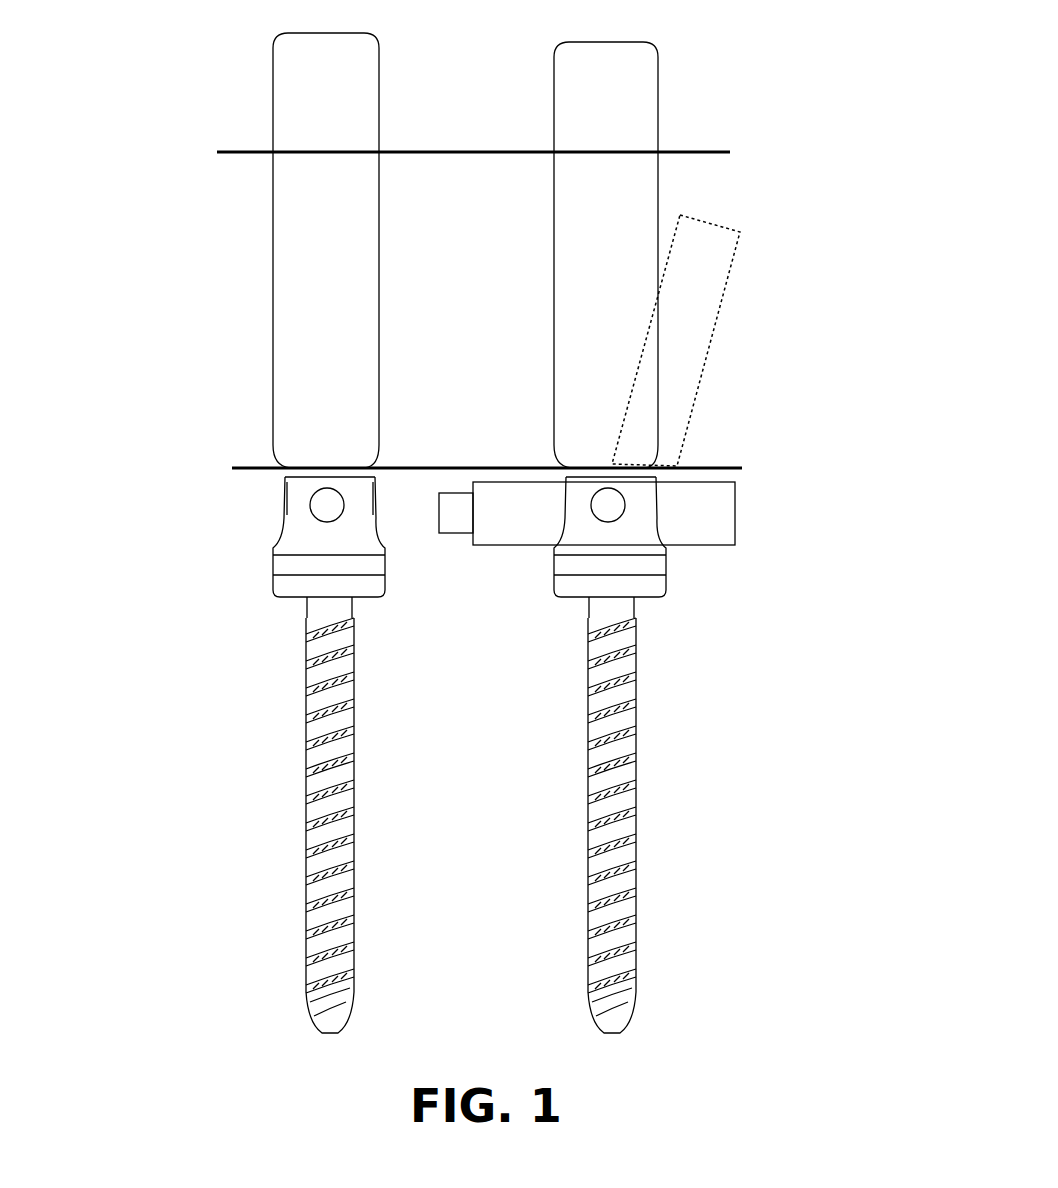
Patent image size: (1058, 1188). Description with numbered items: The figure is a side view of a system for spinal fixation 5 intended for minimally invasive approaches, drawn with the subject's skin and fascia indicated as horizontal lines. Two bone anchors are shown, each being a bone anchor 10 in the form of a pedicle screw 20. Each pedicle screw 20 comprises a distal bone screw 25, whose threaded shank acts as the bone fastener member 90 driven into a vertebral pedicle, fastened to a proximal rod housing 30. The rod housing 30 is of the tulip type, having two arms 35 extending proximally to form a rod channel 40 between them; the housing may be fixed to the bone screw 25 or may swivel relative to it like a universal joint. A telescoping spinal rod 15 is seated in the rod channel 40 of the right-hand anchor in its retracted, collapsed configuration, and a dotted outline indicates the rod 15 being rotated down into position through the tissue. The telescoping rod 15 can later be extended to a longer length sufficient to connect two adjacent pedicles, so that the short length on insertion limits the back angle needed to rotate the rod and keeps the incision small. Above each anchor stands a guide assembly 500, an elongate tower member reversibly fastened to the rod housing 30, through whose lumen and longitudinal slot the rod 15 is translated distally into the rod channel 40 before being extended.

The system for spinal fixation 5 is at (124, 346).
The bone anchor 10 is at (203, 563).
The telescoping spinal rod 15 is at (750, 265).
The pedicle screw 20 is at (395, 590).
The distal bone screw 25 is at (357, 953).
The proximal rod housing 30 is at (290, 565).
The arms 35 is at (288, 481).
The rod channel 40 is at (280, 524).
The bone fastener member 90 is at (357, 838).
The guide assembly 500 is at (287, 100).